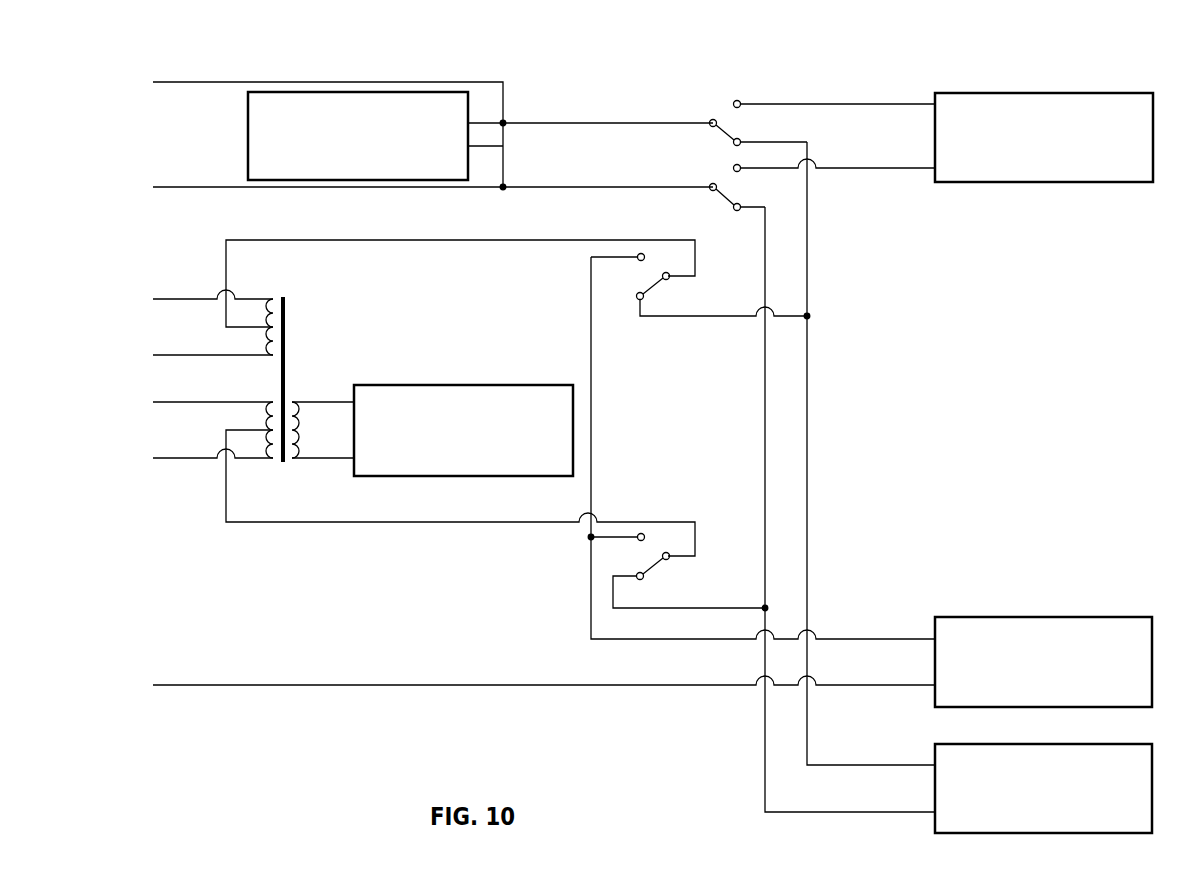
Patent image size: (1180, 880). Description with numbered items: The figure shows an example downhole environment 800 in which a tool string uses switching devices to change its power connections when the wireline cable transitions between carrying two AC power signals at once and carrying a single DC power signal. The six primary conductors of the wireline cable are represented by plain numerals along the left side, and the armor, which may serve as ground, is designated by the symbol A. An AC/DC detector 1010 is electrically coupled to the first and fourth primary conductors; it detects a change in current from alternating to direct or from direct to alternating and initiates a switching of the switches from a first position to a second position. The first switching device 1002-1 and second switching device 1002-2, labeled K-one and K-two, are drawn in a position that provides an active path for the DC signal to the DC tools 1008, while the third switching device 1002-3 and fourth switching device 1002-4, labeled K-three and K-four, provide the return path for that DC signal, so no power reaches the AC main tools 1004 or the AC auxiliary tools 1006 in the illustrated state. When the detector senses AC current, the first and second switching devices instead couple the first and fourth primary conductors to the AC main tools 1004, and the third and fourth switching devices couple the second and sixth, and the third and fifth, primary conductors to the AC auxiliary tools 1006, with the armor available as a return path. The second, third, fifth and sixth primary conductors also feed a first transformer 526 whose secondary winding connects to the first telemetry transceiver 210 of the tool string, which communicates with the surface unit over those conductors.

The power and telemetry switching system 800 is at (152, 46).
The AC/DC detector 1010 is at (248, 136).
The first switching device 1002-1 is at (718, 105).
The second switching device 1002-2 is at (720, 170).
The third switching device 1002-3 is at (655, 264).
The fourth switching device 1002-4 is at (657, 543).
The AC main tools 1004 is at (1080, 93).
The AC auxiliary tools 1006 is at (1080, 617).
The DC tools 1008 is at (1080, 744).
The first transformer 526 is at (296, 309).
The first telemetry transceiver 210 is at (415, 385).